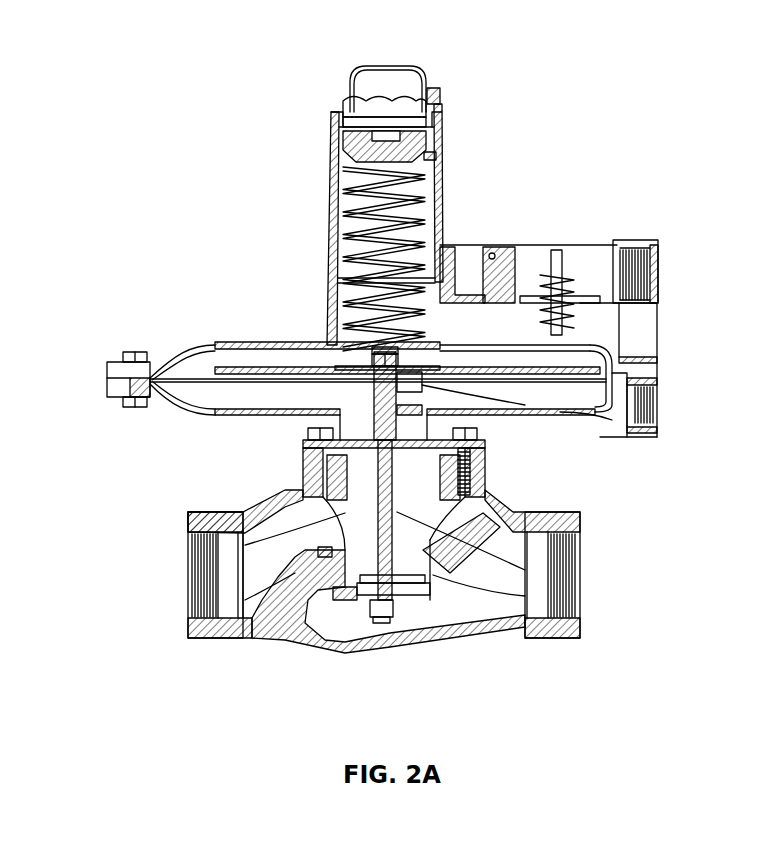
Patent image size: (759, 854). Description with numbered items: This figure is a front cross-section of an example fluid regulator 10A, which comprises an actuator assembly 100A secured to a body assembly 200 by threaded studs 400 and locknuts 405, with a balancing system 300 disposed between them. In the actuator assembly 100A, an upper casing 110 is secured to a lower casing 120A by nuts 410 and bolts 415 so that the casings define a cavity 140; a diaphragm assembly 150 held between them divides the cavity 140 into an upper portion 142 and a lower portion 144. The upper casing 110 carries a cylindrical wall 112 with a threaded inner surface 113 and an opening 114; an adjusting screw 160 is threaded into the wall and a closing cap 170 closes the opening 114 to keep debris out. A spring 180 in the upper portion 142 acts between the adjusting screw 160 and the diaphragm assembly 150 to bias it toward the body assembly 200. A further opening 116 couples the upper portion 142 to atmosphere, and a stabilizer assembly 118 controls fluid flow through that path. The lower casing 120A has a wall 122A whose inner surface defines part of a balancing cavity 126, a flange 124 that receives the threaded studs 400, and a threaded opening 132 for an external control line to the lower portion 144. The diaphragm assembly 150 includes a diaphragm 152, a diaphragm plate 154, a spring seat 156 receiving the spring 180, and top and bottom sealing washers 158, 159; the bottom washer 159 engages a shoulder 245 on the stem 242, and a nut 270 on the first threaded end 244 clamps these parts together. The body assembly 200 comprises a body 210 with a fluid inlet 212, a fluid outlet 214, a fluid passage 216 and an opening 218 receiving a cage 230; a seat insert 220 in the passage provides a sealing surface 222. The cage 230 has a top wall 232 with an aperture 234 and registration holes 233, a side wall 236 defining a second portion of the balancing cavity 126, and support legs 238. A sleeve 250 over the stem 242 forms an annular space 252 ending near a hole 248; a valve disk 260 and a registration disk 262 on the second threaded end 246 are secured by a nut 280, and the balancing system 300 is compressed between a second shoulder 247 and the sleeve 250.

The regulator 10A is at (115, 108).
The actuator assembly 100A is at (222, 303).
The body assembly 200 is at (162, 501).
The closing cap 170 is at (348, 100).
The cylindrical wall 112 is at (331, 190).
The opening 114 is at (436, 104).
The threaded inner surface 113 is at (438, 157).
The adjusting screw 160 is at (346, 158).
The spring 180 is at (340, 216).
The first threaded end 244 is at (386, 352).
The nut 270 is at (372, 348).
The top sealing washer 158 is at (373, 358).
The spring seat 156 is at (338, 366).
The cavity 140 is at (490, 339).
The upper portion 142 is at (478, 305).
The diaphragm plate 154 is at (556, 296).
The stabilizer assembly 118 is at (566, 286).
The opening 116 is at (658, 260).
The diaphragm 152 is at (620, 358).
The threaded opening 132 is at (660, 392).
The bottom sealing washer 159 is at (645, 410).
The shoulder 245 is at (615, 410).
The diaphragm assembly 150 is at (165, 350).
The upper casing 110 is at (230, 366).
The hole 248 is at (300, 366).
The stem 242 is at (355, 380).
The lower portion 144 is at (372, 425).
The wall 122A is at (270, 390).
The lower casing 120A is at (215, 405).
The bolt 415 is at (128, 352).
The nut 410 is at (128, 407).
The flange 124 is at (305, 462).
The locknut 405 is at (310, 440).
The threaded stud 400 is at (472, 470).
The balancing system 300 is at (492, 452).
The second shoulder 247 is at (478, 480).
The balancing cavity 126 is at (525, 390).
The side wall 236 is at (330, 500).
The aperture 234 is at (462, 478).
The cage 230 is at (190, 524).
The fluid inlet 212 is at (205, 585).
The registration hole 233 is at (235, 545).
The fluid passage 216 is at (260, 560).
The fluid outlet 214 is at (570, 575).
The opening 218 is at (520, 512).
The support legs 238 is at (540, 538).
The top wall 232 is at (520, 560).
The seat insert 220 is at (545, 600).
The sealing surface 222 is at (480, 598).
The registration disk 262 is at (418, 600).
The annular space 252 is at (405, 600).
The sleeve 250 is at (412, 596).
The nut 280 is at (385, 617).
The second threaded end 246 is at (373, 620).
The valve disk 260 is at (355, 610).
The body 210 is at (395, 650).